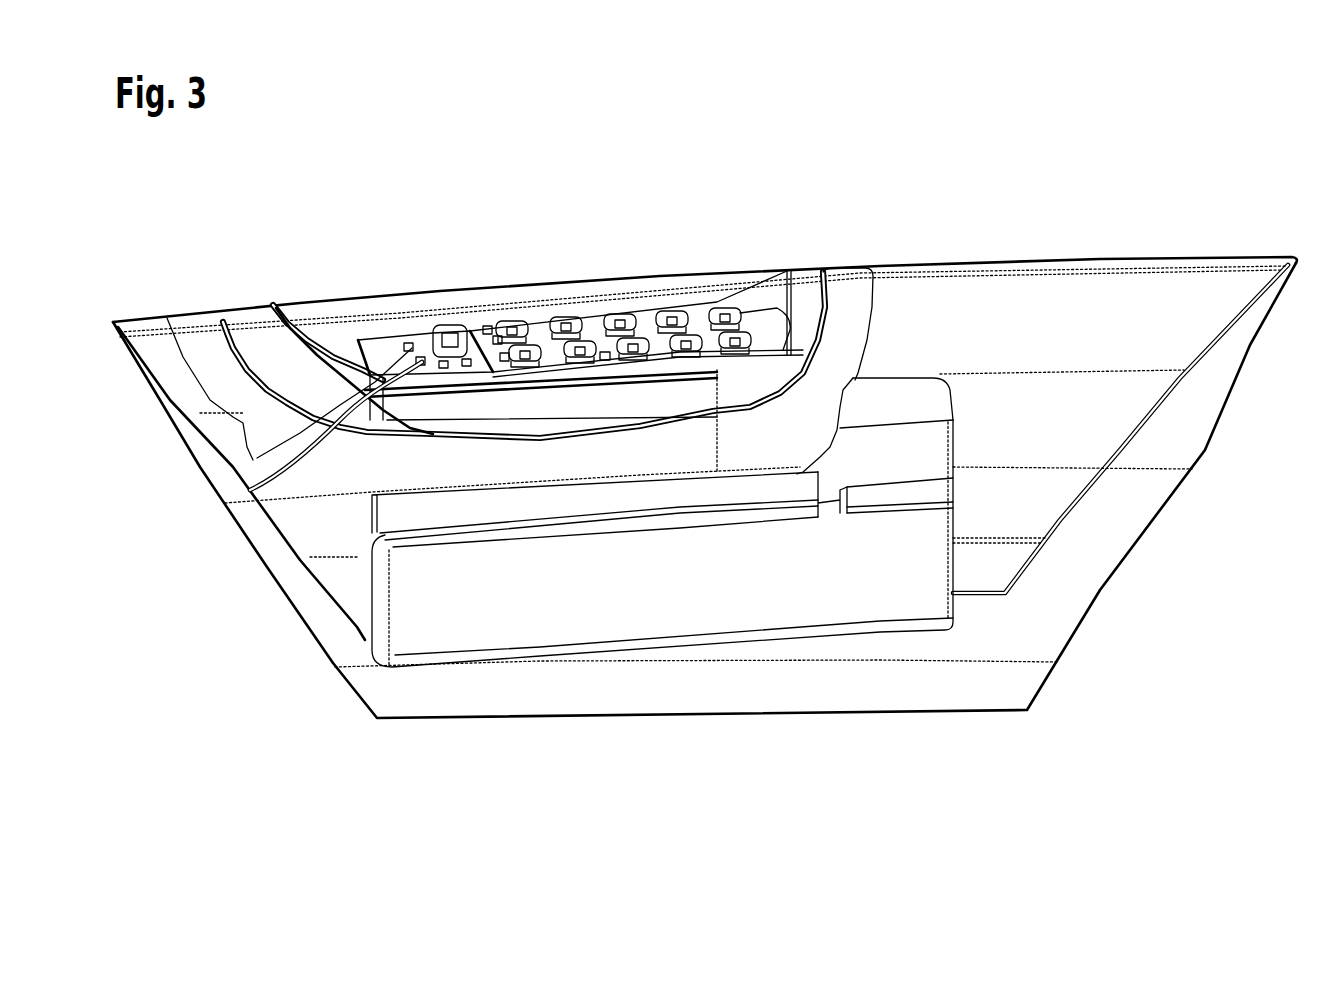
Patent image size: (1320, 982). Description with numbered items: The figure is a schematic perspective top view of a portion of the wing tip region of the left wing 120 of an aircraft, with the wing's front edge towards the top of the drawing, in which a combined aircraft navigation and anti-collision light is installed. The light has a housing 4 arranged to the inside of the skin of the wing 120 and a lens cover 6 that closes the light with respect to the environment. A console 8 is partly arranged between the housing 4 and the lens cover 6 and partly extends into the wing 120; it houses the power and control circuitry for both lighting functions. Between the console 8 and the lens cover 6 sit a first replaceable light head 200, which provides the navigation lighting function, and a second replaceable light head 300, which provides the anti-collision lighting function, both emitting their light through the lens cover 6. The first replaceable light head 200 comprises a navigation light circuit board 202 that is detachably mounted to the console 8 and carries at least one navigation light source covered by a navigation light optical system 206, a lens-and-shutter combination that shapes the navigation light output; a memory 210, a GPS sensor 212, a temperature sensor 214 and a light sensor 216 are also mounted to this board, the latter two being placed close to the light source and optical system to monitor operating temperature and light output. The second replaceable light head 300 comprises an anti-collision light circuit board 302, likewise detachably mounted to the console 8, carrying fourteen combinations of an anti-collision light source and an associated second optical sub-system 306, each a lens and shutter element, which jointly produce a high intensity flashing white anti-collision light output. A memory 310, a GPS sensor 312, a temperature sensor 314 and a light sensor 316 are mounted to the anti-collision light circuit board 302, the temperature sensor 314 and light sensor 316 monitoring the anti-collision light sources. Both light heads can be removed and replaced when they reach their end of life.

The housing 4 is at (846, 298).
The lens cover 6 is at (345, 307).
The console 8 is at (783, 370).
The left wing 120 is at (1168, 297).
The first replaceable light head 200 is at (423, 318).
The navigation light circuit board 202 is at (397, 343).
The navigation light optical system 206 is at (447, 328).
The memory 210 is at (257, 458).
The GPS sensor 212 is at (250, 490).
The temperature sensor 214 is at (443, 368).
The light sensor 216 is at (467, 368).
The second replaceable light head 300 is at (589, 296).
The anti-collision light circuit board 302 is at (758, 320).
The second optical sub-system 306 is at (670, 307).
The memory 310 is at (487, 326).
The GPS sensor 312 is at (505, 360).
The temperature sensor 314 is at (615, 360).
The light sensor 316 is at (560, 365).